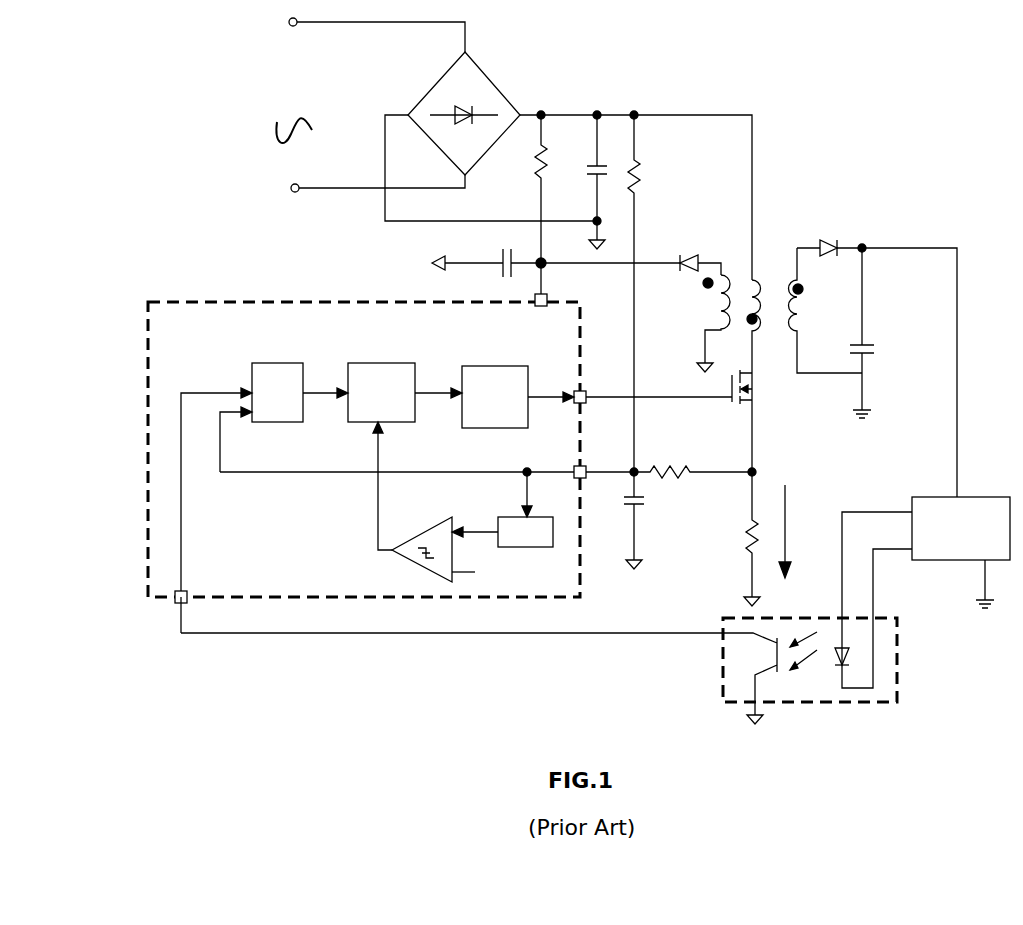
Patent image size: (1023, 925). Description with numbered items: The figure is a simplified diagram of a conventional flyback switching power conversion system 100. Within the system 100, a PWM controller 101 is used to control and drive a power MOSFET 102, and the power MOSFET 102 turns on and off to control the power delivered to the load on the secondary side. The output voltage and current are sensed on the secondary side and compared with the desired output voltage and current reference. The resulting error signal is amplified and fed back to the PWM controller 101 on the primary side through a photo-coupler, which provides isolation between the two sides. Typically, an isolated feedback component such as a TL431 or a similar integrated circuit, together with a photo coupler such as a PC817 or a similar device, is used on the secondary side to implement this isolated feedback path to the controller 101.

The flyback switching power conversion system 100 is at (837, 102).
The PWM controller 101 is at (225, 298).
The power MOSFET 102 is at (757, 378).